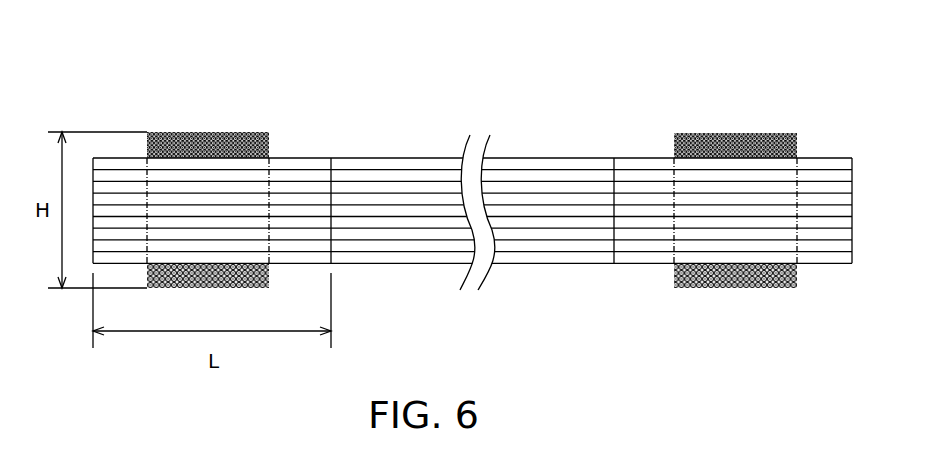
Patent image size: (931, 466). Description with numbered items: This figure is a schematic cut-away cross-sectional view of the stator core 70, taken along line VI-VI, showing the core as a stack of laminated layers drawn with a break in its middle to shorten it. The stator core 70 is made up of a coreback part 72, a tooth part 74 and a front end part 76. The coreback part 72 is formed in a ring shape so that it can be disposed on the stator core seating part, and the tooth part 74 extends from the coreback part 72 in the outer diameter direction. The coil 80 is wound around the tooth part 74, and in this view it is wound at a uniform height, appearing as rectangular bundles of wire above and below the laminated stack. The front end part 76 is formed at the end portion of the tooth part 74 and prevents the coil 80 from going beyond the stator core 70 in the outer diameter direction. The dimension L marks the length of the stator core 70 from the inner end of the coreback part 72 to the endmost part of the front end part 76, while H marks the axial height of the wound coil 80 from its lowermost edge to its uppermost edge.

The stator core 70 is at (473, 28).
The coreback part 72 is at (310, 220).
The tooth part 74 is at (247, 222).
The front end part 76 is at (118, 162).
The coil 80 is at (207, 132).